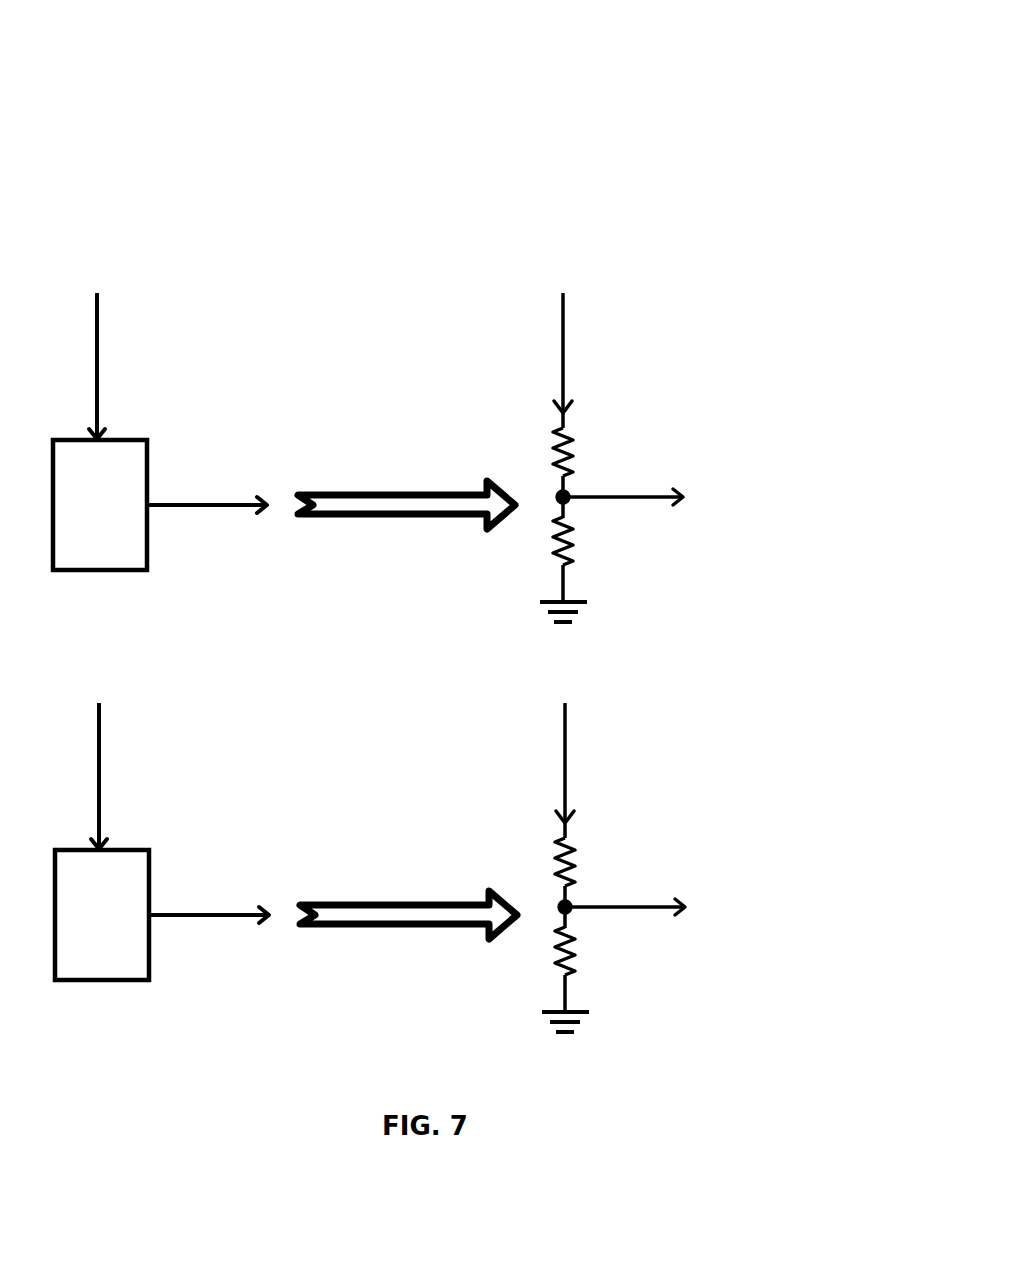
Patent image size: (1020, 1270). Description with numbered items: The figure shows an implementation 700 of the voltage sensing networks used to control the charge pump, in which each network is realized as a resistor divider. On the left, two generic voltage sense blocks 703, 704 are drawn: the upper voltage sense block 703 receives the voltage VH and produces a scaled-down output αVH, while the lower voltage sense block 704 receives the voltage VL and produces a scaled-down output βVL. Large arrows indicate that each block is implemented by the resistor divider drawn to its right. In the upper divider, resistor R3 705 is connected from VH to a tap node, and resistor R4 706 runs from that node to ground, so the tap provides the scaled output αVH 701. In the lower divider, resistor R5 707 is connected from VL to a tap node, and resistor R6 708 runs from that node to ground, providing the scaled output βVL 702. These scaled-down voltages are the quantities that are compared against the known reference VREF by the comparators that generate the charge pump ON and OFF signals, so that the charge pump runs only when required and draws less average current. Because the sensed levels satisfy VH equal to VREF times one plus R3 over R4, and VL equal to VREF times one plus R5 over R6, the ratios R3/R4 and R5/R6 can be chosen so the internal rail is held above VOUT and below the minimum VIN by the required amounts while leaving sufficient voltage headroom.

The voltage sensing circuit implementation 700 is at (432, 165).
The high-side resistor divider output αVH 701 is at (689, 494).
The low-side resistor divider output βVL 702 is at (611, 870).
The high-side voltage sense block 703 is at (151, 432).
The low-side voltage sense block 704 is at (166, 828).
The resistor divider 705 is at (527, 431).
The resistor divider 706 is at (534, 553).
The resistor divider 707 is at (492, 826).
The resistor divider 708 is at (492, 995).